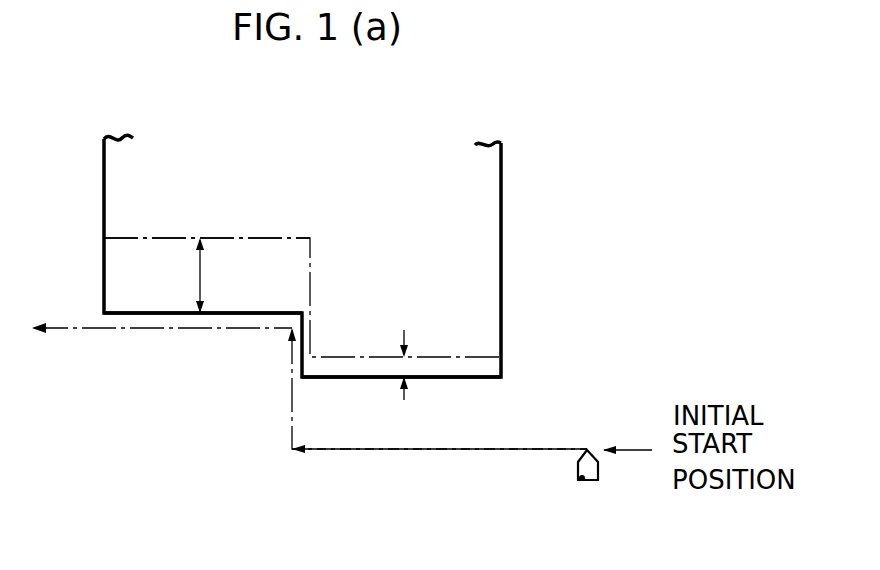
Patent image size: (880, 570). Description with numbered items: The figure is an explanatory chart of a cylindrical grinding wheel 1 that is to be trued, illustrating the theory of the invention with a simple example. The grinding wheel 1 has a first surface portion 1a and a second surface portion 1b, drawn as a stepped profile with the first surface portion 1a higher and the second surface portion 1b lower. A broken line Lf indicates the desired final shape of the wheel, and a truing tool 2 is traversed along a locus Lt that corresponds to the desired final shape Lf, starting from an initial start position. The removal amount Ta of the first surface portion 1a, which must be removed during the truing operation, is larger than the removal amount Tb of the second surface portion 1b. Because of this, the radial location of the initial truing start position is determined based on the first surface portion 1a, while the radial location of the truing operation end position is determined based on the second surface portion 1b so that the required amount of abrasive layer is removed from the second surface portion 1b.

The cylindrical grinding wheel 1 is at (490, 173).
The first surface portion 1a is at (135, 315).
The second surface portion 1b is at (495, 378).
The truing tool 2 is at (578, 473).
The desired final shape Lf is at (312, 236).
The removal amount of the first surface portion Ta is at (220, 275).
The removal amount of the second surface portion Tb is at (406, 368).
The locus Lt is at (378, 451).